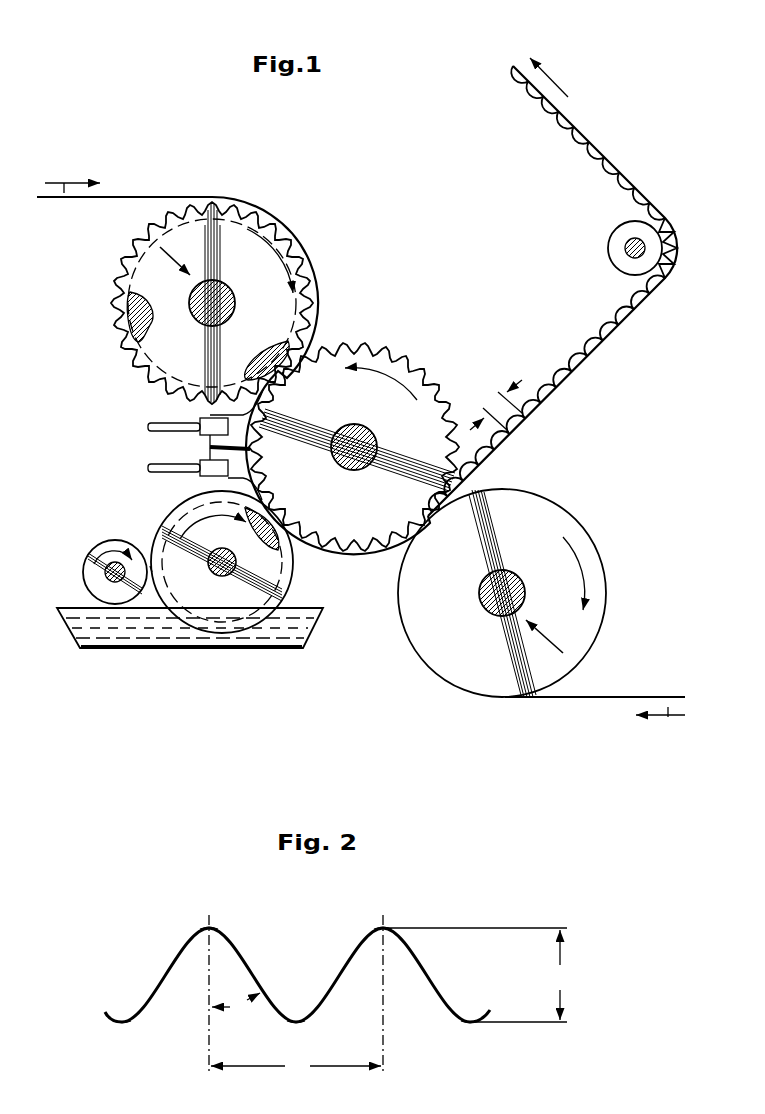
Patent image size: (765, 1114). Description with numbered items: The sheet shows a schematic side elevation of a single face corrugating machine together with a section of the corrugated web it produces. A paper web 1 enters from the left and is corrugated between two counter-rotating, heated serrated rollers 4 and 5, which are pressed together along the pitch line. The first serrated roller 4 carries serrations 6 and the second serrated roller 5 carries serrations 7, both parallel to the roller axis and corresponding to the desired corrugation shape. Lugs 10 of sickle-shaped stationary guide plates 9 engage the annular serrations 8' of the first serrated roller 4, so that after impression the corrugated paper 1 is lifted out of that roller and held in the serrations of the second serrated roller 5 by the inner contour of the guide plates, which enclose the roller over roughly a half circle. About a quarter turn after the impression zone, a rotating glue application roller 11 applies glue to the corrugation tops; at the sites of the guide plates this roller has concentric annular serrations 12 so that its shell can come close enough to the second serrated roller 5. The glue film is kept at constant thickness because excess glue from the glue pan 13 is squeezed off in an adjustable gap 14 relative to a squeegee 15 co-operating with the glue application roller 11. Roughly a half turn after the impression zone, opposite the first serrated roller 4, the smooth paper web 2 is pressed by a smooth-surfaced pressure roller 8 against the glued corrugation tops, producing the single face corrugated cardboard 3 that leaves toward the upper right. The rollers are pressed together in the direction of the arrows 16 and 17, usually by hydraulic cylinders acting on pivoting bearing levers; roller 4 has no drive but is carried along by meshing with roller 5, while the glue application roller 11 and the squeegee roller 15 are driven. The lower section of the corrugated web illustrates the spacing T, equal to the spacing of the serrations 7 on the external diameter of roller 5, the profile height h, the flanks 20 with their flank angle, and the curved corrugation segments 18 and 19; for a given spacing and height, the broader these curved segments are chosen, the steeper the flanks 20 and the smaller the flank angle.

In FIG. 1, the paper web 1 is at (82, 195).
In FIG. 1, the smooth paper web 2 is at (645, 697).
In FIG. 1, the single face corrugated cardboard 3 is at (573, 127).
In FIG. 1, the first serrated roller 4 is at (238, 228).
In FIG. 1, the second serrated roller 5 is at (375, 360).
In FIG. 1, the serrations 6 is at (130, 248).
In FIG. 1, the serrations 7 is at (413, 365).
In FIG. 1, the pressure roller 8 is at (502, 583).
In FIG. 1, the annular serrations 8' is at (109, 317).
In FIG. 1, the guide plates 9 is at (210, 440).
In FIG. 1, the lugs 10 is at (285, 365).
In FIG. 1, the glue application roller 11 is at (190, 515).
In FIG. 1, the annular serrations 12 is at (298, 555).
In FIG. 1, the glue pan 13 is at (70, 642).
In FIG. 1, the adjustable gap 14 is at (150, 568).
In FIG. 1, the squeegee 15 is at (97, 548).
In FIG. 1, the arrow 16 is at (160, 250).
In FIG. 1, the arrow 17 is at (550, 632).
In FIG. 1, the spacing T is at (495, 410).
In FIG. 2, the spacing T is at (296, 1067).
In FIG. 2, the curved corrugation segments 18 is at (215, 927).
In FIG. 2, the curved corrugation segments 19 is at (130, 1024).
In FIG. 2, the flanks 20 is at (255, 980).
In FIG. 2, the profile height h is at (476, 975).